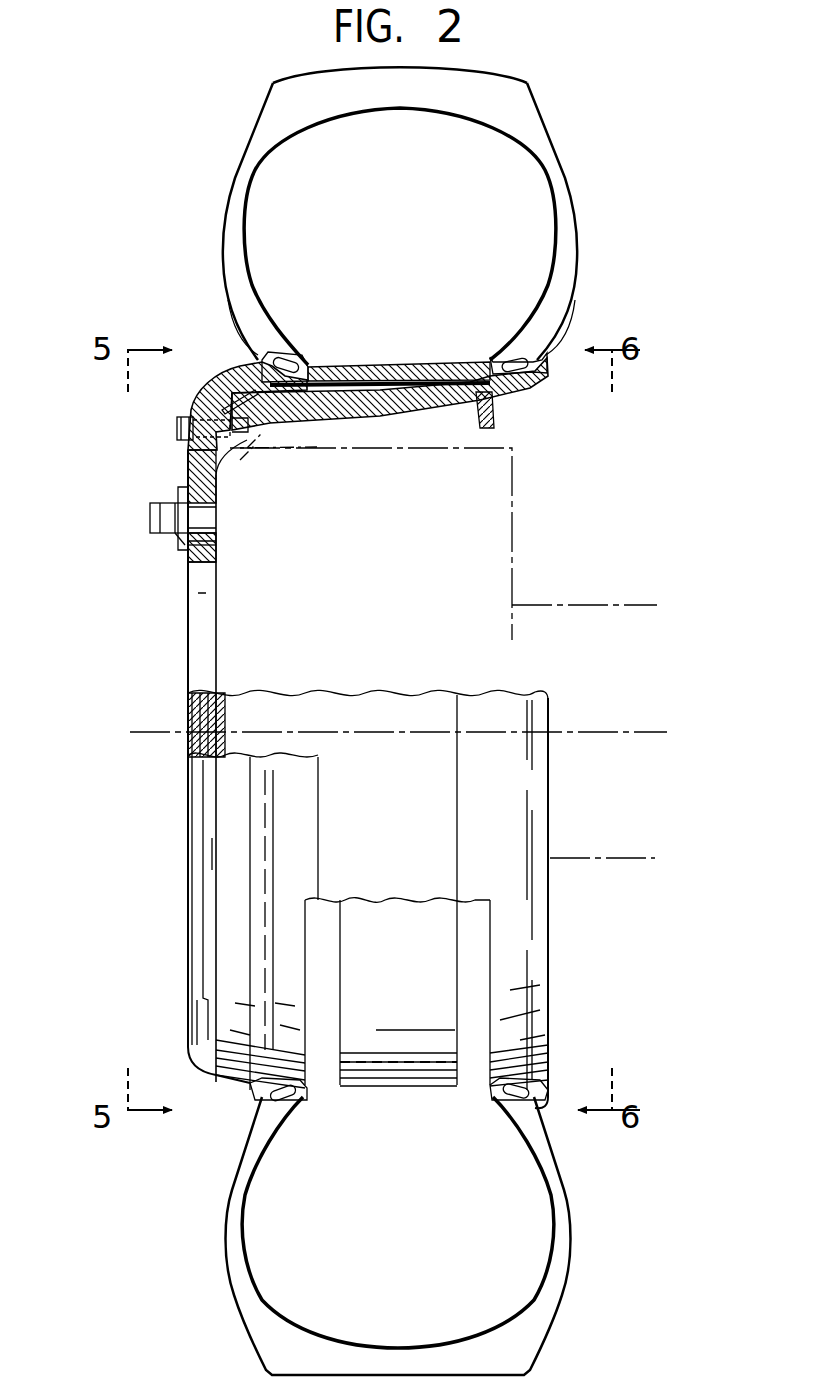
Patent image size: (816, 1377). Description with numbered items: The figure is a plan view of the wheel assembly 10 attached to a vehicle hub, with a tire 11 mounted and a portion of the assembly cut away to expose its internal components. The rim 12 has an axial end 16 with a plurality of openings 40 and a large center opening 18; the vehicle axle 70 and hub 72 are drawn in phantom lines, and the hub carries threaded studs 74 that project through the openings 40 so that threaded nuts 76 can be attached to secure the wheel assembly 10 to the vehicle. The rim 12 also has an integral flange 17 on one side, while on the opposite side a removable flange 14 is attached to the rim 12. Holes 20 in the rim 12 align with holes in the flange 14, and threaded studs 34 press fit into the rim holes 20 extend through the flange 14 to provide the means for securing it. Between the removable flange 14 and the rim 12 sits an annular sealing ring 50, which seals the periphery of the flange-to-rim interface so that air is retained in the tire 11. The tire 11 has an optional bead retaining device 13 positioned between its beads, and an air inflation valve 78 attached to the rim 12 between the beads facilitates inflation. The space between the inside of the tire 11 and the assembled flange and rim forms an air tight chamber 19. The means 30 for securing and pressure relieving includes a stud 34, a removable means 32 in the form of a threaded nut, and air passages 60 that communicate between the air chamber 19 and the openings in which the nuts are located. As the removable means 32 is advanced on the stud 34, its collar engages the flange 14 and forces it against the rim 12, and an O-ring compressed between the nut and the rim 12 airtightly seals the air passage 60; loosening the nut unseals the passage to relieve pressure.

The wheel assembly 10 is at (158, 913).
The tire 11 is at (540, 130).
The rim 12 is at (410, 410).
The bead retaining device 13 is at (448, 365).
The flange 14 is at (215, 376).
The axial end 16 is at (172, 546).
The integral flange 17 is at (552, 348).
The center opening 18 is at (204, 566).
The air tight chamber 19 is at (411, 204).
The holes 20 is at (250, 430).
The means for securing and pressure relieving 30 is at (166, 437).
The removable means 32 is at (172, 424).
The threaded stud 34 is at (232, 445).
The openings 40 is at (210, 533).
The annular sealing ring 50 is at (212, 392).
The air passages 60 is at (258, 405).
The axle 70 is at (620, 605).
The hub 72 is at (505, 514).
The threaded studs 74 is at (150, 516).
The threaded nuts 76 is at (168, 543).
The air inflation valve 78 is at (495, 418).